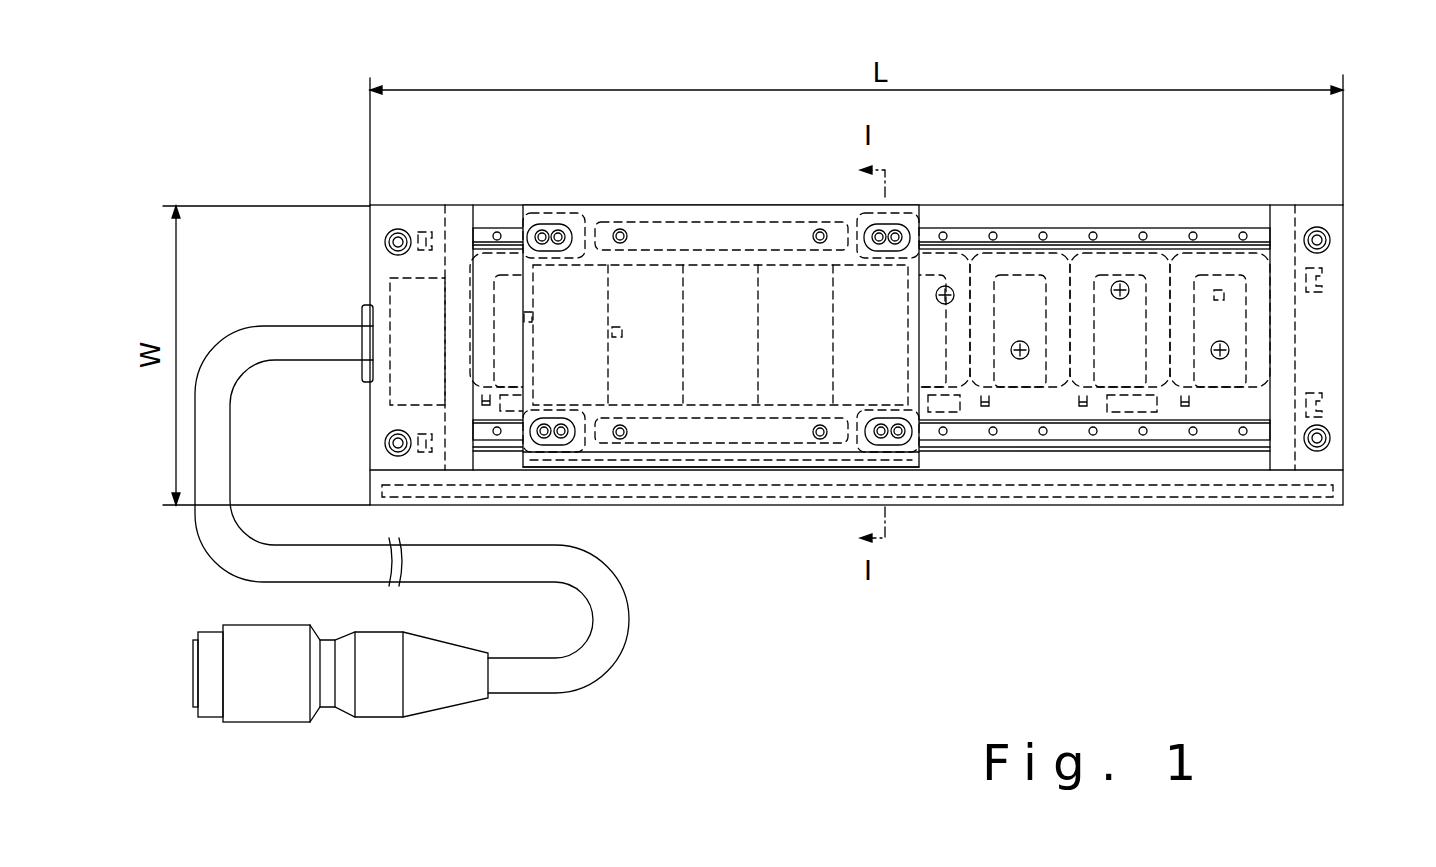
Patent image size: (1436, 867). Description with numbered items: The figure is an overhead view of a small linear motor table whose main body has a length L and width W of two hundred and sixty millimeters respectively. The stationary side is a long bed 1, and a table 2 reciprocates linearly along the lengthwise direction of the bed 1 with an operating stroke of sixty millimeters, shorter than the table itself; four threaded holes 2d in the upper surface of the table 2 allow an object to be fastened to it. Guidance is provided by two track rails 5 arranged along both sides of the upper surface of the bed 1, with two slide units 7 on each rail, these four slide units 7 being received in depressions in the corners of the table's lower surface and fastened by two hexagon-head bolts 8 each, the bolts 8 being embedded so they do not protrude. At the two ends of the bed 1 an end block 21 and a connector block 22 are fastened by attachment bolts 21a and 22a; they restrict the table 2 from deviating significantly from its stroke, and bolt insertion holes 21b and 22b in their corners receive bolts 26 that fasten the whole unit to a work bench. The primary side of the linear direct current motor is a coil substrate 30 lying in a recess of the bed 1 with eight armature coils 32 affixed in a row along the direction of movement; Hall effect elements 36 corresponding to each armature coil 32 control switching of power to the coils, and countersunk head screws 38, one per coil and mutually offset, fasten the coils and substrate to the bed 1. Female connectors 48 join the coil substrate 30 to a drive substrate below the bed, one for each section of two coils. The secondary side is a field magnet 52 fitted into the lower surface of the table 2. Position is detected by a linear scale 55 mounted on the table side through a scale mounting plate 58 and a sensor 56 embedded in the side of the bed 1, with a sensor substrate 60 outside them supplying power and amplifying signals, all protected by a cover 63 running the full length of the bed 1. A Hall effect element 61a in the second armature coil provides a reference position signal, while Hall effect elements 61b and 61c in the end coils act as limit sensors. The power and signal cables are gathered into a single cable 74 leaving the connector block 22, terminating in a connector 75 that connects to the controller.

The bed 1 is at (944, 205).
The table 2 is at (657, 203).
The threaded holes 2d is at (618, 229).
The track rails 5 is at (1272, 228).
The slide units 7 is at (558, 228).
The bolts 8 is at (540, 229).
The end block 21 is at (1330, 330).
The attachment bolts 21a is at (1322, 283).
The bolt insertion holes 21b is at (1322, 237).
The connector block 22 is at (372, 282).
The attachment bolts 22a is at (418, 236).
The bolt insertion holes 22b is at (393, 243).
The bolts 26 is at (390, 250).
The coil substrate 30 is at (1255, 395).
The armature coils 32 is at (487, 268).
The Hall effect elements 36 is at (484, 408).
The countersunk head screws 38 is at (1025, 342).
The female connectors 48 is at (515, 412).
The field magnet 52 is at (700, 262).
The linear scale 55 is at (765, 455).
The sensor 56 is at (862, 455).
The scale mounting plate 58 is at (630, 462).
The sensor substrate 60 is at (1055, 488).
The Hall effect element 61a is at (620, 336).
The Hall effect element 61b is at (532, 320).
The Hall effect element 61c is at (1224, 296).
The cover 63 is at (1320, 488).
The cable 74 is at (603, 678).
The connector 75 is at (275, 722).